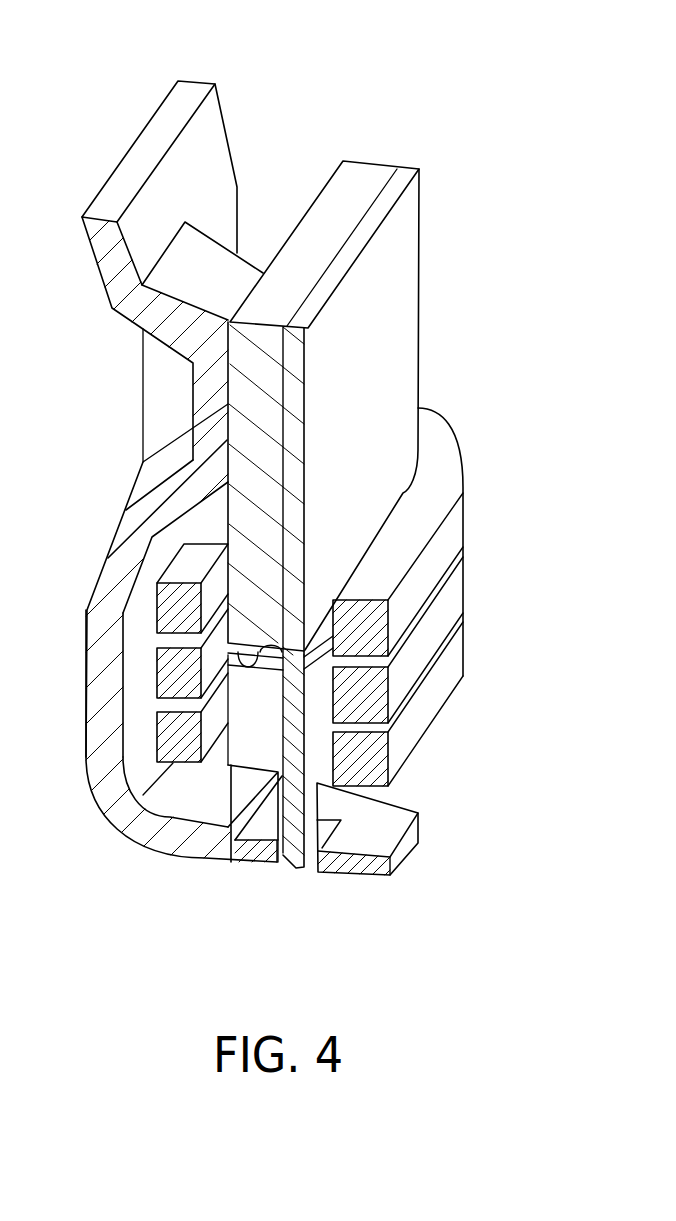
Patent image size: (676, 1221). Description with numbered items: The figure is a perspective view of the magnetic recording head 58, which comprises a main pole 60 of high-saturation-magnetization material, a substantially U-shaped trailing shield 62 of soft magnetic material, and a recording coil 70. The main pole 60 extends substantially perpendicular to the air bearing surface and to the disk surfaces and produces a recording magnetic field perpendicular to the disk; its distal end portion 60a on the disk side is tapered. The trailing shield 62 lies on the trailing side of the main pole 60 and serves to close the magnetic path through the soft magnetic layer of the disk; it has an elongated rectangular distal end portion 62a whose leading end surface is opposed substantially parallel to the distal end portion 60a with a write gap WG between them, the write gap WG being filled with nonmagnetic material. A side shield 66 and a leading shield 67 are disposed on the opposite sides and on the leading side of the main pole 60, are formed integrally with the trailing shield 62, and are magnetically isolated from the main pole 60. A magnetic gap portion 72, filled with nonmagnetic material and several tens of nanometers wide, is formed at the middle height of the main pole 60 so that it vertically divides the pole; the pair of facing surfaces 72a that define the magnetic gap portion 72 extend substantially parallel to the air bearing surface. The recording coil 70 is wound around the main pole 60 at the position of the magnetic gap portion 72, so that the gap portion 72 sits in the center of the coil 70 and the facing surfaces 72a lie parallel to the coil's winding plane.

The magnetic recording head 58 is at (298, 92).
The main pole 60 is at (419, 286).
The distal end portion of the main pole 60a is at (295, 862).
The trailing shield 62 is at (88, 708).
The distal end portion of the trailing shield 62a is at (254, 864).
The side shield 66 is at (340, 805).
The leading shield 67 is at (363, 877).
The recording coil 70 is at (458, 537).
The magnetic gap portion 72 is at (184, 685).
The facing surfaces 72a is at (283, 648).
The write gap WG is at (282, 864).